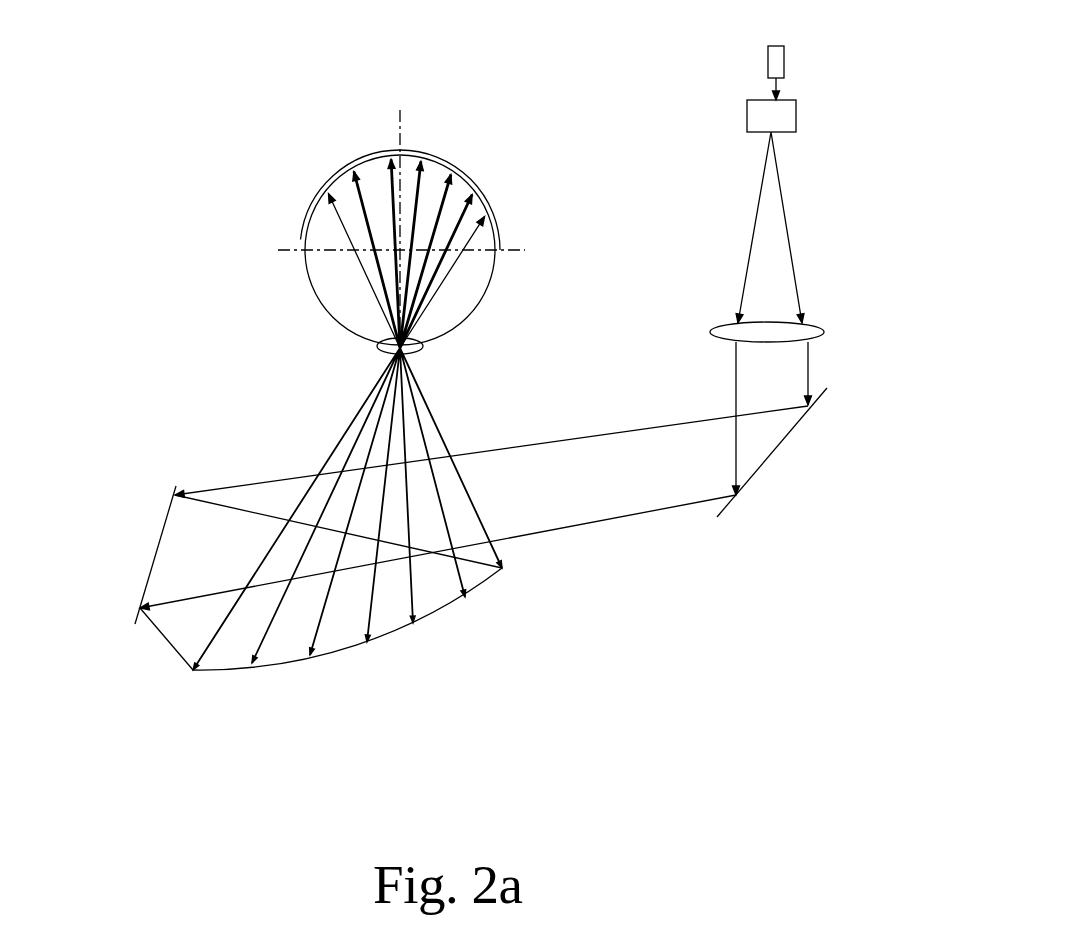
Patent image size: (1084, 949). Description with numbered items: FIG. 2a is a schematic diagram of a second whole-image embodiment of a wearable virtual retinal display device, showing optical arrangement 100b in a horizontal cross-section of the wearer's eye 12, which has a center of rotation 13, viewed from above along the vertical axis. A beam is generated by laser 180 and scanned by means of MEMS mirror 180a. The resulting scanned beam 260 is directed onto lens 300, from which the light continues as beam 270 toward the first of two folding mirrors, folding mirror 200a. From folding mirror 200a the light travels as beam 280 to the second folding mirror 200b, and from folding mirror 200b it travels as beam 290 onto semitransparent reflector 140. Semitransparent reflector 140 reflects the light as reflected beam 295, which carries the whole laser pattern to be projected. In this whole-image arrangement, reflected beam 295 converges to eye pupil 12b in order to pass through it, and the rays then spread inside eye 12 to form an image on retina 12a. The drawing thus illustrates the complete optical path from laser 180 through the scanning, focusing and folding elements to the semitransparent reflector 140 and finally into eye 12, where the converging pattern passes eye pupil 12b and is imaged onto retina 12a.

The optical arrangement 100b is at (190, 288).
The laser 180 is at (785, 60).
The MEMS mirror 180a is at (796, 108).
The scanned beam 260 is at (790, 233).
The lens 300 is at (810, 333).
The collimated light beam 270 is at (812, 380).
The folding mirror 200a is at (773, 452).
The beam 280 is at (593, 437).
The folding mirror 200b is at (152, 518).
The beam 290 is at (260, 508).
The semitransparent reflector 140 is at (432, 617).
The reflected beam 295 is at (440, 432).
The eye 12 is at (463, 287).
The retina 12a is at (423, 152).
The eye pupil 12b is at (377, 347).
The center of rotation 13 is at (400, 247).